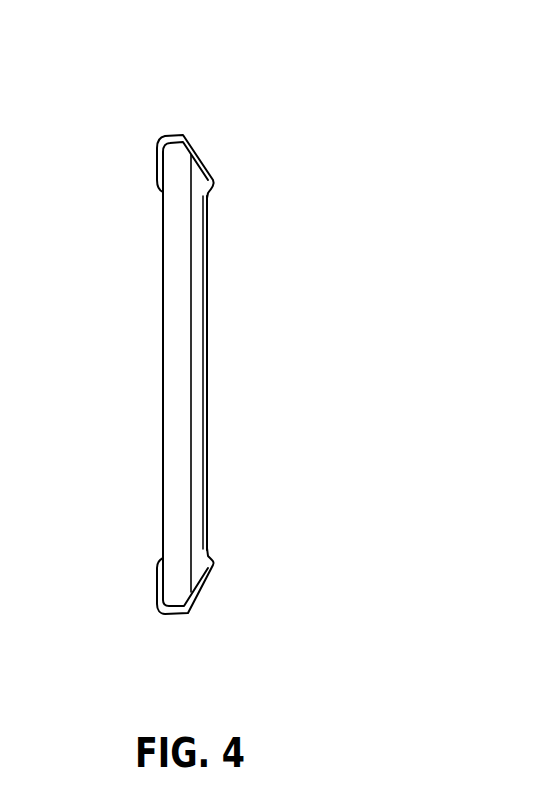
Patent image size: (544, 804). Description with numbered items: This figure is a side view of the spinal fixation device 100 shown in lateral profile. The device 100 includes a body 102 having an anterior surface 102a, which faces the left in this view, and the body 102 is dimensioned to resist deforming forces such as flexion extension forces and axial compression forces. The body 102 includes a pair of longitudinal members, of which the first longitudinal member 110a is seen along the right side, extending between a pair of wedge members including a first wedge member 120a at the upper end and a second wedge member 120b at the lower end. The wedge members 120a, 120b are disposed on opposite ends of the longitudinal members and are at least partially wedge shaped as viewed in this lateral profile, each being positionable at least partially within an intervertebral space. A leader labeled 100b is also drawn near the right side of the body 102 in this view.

The spinal fixation device 100 is at (496, 128).
The body 102 is at (175, 279).
The anterior surface 102a is at (160, 463).
The first longitudinal member 110a is at (203, 369).
The side portion 100b is at (203, 458).
The first wedge member 120a is at (183, 163).
The second wedge member 120b is at (176, 592).